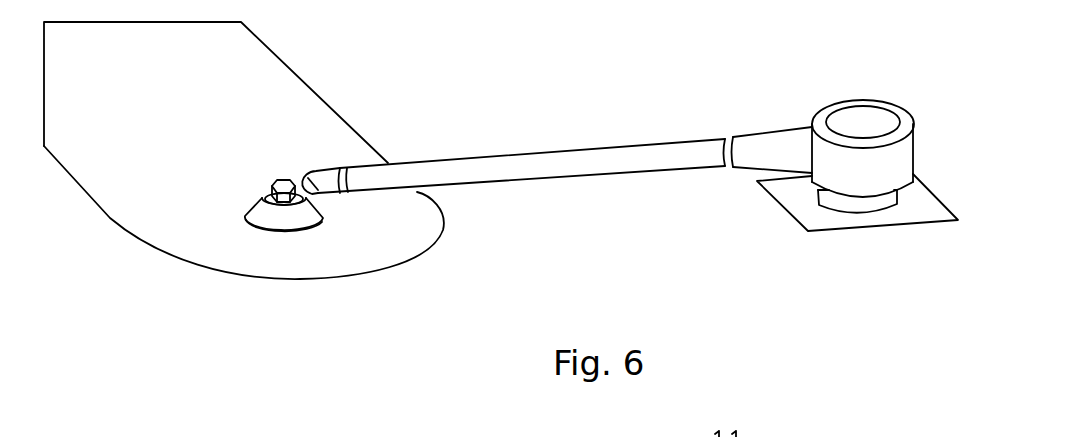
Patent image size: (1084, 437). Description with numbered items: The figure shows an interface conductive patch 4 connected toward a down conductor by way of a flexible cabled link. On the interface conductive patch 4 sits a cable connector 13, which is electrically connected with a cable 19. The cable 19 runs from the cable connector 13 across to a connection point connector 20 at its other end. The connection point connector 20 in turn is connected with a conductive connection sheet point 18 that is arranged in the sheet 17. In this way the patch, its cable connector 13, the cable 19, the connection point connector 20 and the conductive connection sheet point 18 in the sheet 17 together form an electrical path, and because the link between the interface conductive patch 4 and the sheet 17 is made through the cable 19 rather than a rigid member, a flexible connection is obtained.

The interface conductive patch 4 is at (118, 163).
The cable connector 13 is at (297, 222).
The cable 19 is at (546, 162).
The connection point connector 20 is at (863, 123).
The sheet 17 is at (808, 210).
The conductive connection sheet point 18 is at (867, 210).